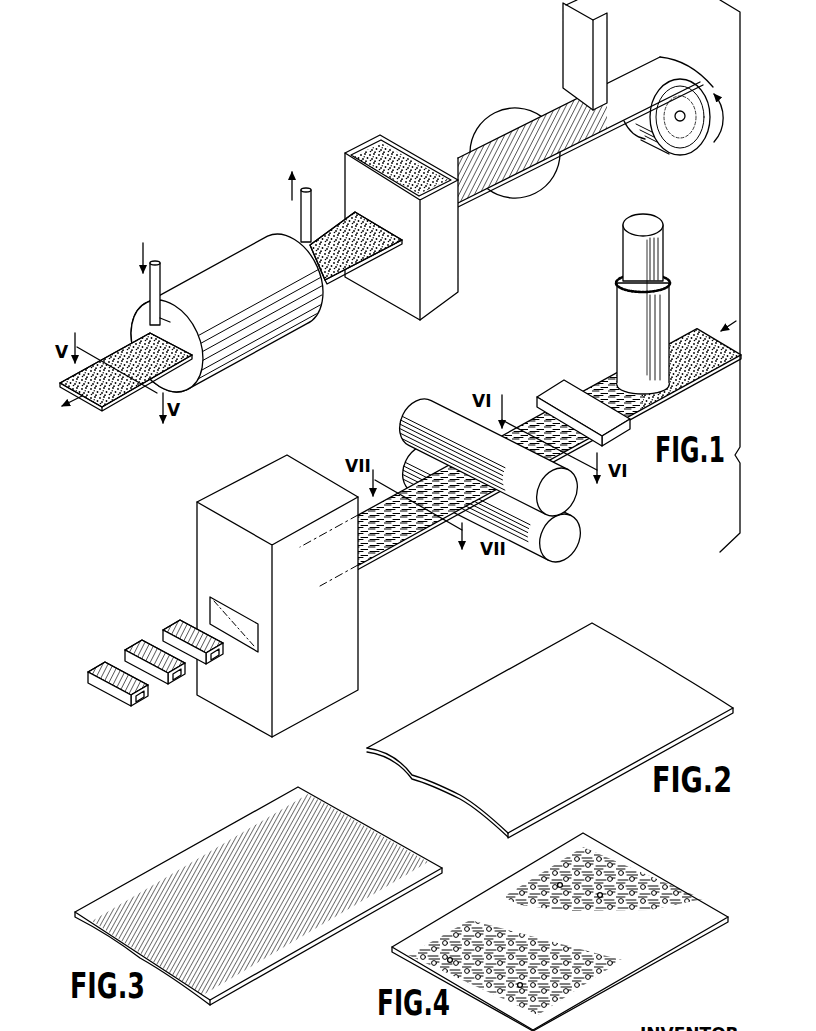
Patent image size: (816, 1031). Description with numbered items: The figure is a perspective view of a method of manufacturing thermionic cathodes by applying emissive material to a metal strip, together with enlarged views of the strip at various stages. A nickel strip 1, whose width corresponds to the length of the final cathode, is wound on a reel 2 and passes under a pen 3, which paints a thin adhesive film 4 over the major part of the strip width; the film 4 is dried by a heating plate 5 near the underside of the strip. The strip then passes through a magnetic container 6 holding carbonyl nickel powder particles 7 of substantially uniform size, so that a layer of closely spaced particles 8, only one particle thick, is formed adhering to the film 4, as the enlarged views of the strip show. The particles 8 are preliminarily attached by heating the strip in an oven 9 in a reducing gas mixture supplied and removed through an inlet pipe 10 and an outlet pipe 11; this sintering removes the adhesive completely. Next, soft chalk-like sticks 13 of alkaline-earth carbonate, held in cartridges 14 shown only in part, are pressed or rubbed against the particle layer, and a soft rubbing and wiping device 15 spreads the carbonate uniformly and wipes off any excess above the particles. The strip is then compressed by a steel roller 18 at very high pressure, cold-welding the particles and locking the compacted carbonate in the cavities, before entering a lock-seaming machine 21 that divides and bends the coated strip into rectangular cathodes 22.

In FIG. 1, the nickel strip 1 is at (628, 78).
In FIG. 2, the nickel strip 1 is at (645, 677).
In FIG. 3, the nickel strip 1 is at (268, 812).
In FIG. 4, the nickel strip 1 is at (575, 846).
In FIG. 1, the reel 2 is at (676, 138).
In FIG. 1, the pen 3 is at (570, 18).
In FIG. 1, the adhesive film 4 is at (510, 155).
In FIG. 3, the adhesive film 4 is at (360, 867).
In FIG. 4, the adhesive film 4 is at (440, 924).
In FIG. 1, the heating plate 5 is at (540, 170).
In FIG. 1, the magnetic container 6 is at (443, 271).
In FIG. 1, the carbonyl nickel powder particles 7 is at (413, 180).
In FIG. 1, the layer of closely spaced particles 8 is at (332, 238).
In FIG. 4, the layer of closely spaced particles 8 is at (610, 879).
In FIG. 1, the oven 9 is at (213, 270).
In FIG. 1, the inlet pipe 10 is at (150, 297).
In FIG. 1, the outlet pipe 11 is at (300, 213).
In FIG. 1, the soft chalk-like sticks 13 is at (646, 258).
In FIG. 1, the cartridges 14 is at (652, 324).
In FIG. 1, the soft rubbing and wiping device 15 is at (559, 396).
In FIG. 1, the steel roller 18 is at (567, 537).
In FIG. 1, the lock-seaming machine 21 is at (345, 626).
In FIG. 1, the rectangular cathodes 22 is at (168, 624).